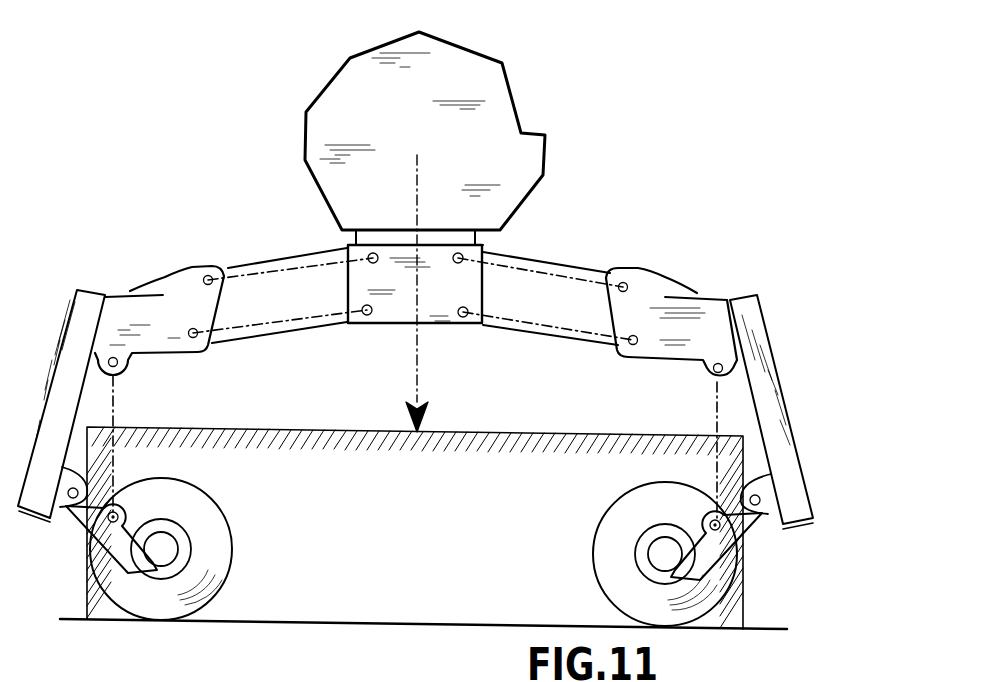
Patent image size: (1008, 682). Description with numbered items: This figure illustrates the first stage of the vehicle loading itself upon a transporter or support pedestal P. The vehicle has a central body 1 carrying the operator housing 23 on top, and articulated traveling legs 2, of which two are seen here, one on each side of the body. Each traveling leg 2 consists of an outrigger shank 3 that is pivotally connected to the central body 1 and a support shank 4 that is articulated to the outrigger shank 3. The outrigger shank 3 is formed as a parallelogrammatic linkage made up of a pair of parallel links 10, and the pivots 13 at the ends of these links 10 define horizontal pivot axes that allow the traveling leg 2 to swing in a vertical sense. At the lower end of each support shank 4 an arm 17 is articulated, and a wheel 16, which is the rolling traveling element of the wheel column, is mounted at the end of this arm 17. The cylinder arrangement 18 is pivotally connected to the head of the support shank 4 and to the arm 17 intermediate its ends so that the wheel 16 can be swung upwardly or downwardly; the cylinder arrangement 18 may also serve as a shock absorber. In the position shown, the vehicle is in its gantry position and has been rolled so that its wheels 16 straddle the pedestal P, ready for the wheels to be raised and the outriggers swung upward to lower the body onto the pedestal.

The central body 1 is at (440, 304).
The traveling leg 2 is at (231, 349).
The outrigger shank 3 is at (283, 256).
The support shank 4 is at (65, 327).
The parallel links 10 is at (300, 320).
The pivots 13 is at (193, 328).
The wheel 16 is at (217, 542).
The arm 17 is at (125, 557).
The cylinder arrangement 18 is at (716, 403).
The operator housing 23 is at (513, 97).
The pedestal P is at (448, 431).